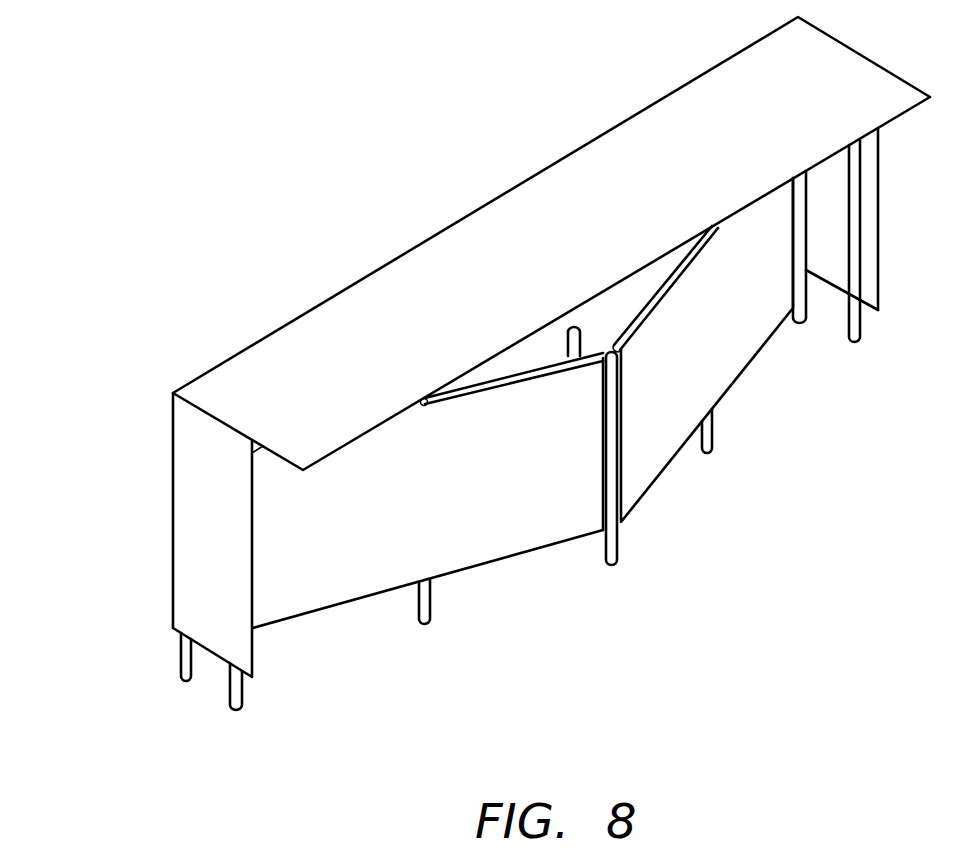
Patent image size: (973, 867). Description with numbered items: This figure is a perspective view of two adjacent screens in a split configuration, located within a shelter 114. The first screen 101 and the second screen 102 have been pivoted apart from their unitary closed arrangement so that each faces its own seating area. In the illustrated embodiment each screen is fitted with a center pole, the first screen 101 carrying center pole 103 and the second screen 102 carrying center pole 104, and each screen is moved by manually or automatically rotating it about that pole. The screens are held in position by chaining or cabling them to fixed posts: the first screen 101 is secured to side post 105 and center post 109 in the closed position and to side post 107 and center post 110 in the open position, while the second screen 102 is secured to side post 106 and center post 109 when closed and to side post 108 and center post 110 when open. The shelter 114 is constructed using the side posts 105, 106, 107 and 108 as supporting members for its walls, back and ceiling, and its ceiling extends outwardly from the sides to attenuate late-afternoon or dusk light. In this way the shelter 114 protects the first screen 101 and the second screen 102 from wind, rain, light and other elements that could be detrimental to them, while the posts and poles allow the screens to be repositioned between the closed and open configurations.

The first screen 101 is at (516, 520).
The second screen 102 is at (657, 435).
The center pole 103 is at (418, 619).
The center pole 104 is at (713, 437).
The side post 105 is at (228, 705).
The side post 106 is at (862, 333).
The side post 107 is at (178, 668).
The side post 108 is at (813, 322).
The center post 109 is at (588, 330).
The center post 110 is at (622, 566).
The shelter 114 is at (532, 207).